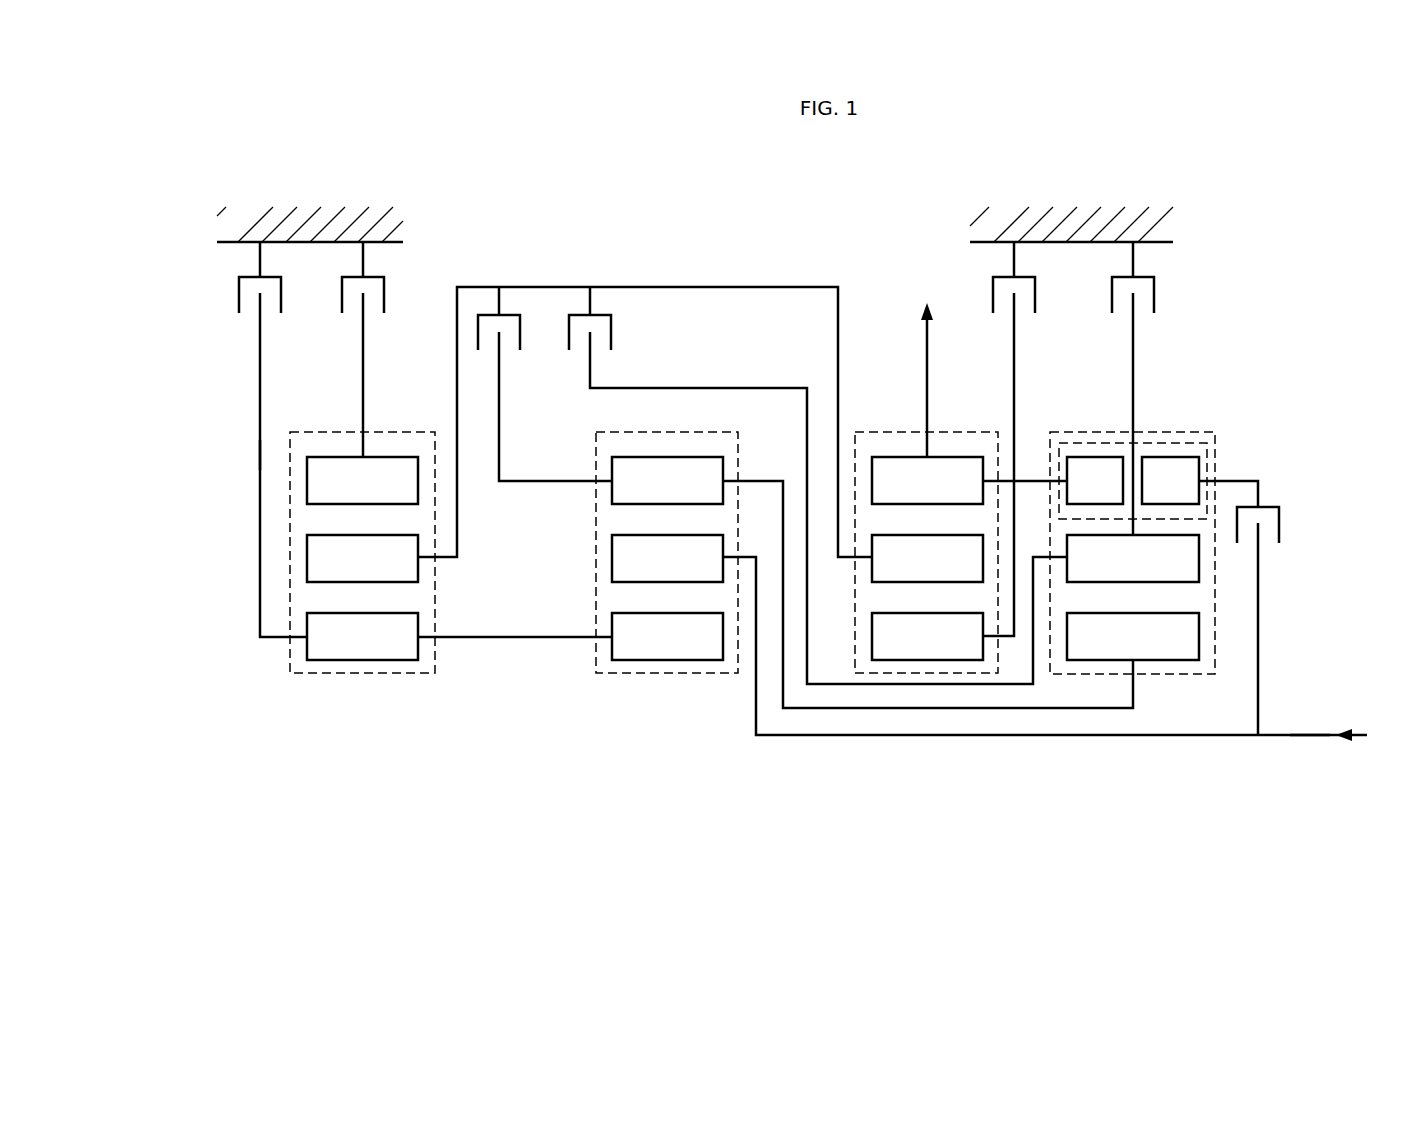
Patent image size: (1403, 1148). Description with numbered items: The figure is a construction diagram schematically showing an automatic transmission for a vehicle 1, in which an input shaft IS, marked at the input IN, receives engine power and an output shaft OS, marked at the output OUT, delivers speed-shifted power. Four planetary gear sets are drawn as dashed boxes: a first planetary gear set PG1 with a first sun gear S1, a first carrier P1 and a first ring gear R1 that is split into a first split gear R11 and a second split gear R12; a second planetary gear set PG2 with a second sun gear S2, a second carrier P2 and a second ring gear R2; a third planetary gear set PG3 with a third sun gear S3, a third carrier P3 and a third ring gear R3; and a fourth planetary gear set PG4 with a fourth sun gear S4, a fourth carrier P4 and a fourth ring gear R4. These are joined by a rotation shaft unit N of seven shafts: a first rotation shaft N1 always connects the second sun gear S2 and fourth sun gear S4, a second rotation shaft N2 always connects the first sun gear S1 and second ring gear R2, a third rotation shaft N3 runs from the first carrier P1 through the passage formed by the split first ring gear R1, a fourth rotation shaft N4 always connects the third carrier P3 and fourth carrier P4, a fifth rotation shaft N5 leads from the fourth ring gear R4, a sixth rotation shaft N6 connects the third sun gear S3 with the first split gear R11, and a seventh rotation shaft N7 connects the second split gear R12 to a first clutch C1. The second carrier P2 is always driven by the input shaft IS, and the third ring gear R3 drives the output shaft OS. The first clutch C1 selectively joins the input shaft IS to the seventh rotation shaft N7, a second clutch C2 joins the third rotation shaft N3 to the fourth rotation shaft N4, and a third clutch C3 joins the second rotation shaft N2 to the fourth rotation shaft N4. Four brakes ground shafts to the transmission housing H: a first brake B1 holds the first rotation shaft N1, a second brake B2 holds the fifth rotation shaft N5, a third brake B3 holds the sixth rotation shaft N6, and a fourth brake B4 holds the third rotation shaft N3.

The automatic transmission for a vehicle 1 is at (297, 768).
The rotation shaft unit N is at (247, 452).
The transmission housing H is at (338, 215).
The input shaft IS is at (1305, 739).
The input IN is at (1057, 653).
The output shaft OS is at (929, 372).
The output OUT is at (927, 300).
The first planetary gear set PG1 is at (1132, 520).
The second planetary gear set PG2 is at (667, 539).
The third planetary gear set PG3 is at (926, 539).
The fourth planetary gear set PG4 is at (362, 539).
The first sun gear S1 is at (1133, 636).
The first carrier P1 is at (1133, 558).
The first ring gear R1 is at (1168, 443).
The first split gear R11 is at (1095, 480).
The second split gear R12 is at (1170, 480).
The second sun gear S2 is at (667, 636).
The second carrier P2 is at (667, 558).
The second ring gear R2 is at (667, 480).
The third sun gear S3 is at (927, 636).
The third carrier P3 is at (927, 558).
The third ring gear R3 is at (927, 480).
The fourth sun gear S4 is at (362, 636).
The fourth carrier P4 is at (362, 558).
The fourth ring gear R4 is at (362, 480).
The first rotation shaft N1 is at (497, 640).
The second rotation shaft N2 is at (1087, 711).
The third rotation shaft N3 is at (833, 688).
The fourth rotation shaft N4 is at (446, 562).
The fifth rotation shaft N5 is at (361, 352).
The sixth rotation shaft N6 is at (1003, 640).
The seventh rotation shaft N7 is at (1243, 480).
The first clutch C1 is at (1274, 621).
The second clutch C2 is at (606, 320).
The third clutch C3 is at (545, 384).
The first brake B1 is at (277, 277).
The second brake B2 is at (380, 277).
The third brake B3 is at (1031, 277).
The fourth brake B4 is at (1150, 277).